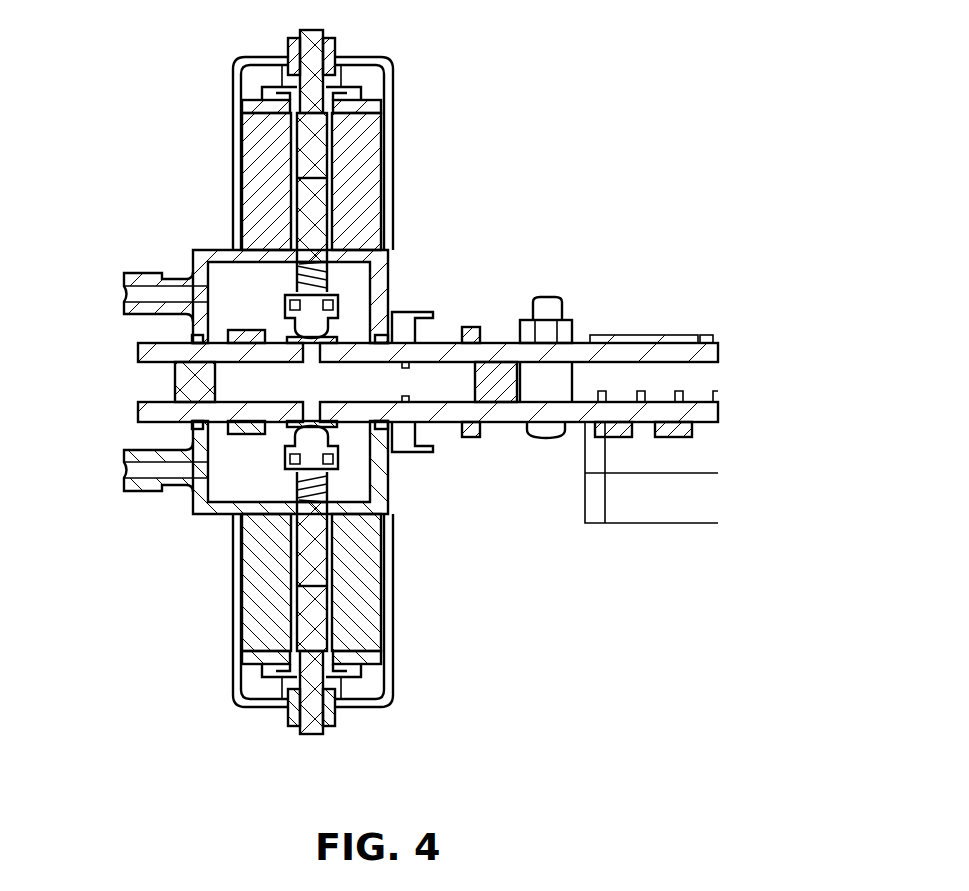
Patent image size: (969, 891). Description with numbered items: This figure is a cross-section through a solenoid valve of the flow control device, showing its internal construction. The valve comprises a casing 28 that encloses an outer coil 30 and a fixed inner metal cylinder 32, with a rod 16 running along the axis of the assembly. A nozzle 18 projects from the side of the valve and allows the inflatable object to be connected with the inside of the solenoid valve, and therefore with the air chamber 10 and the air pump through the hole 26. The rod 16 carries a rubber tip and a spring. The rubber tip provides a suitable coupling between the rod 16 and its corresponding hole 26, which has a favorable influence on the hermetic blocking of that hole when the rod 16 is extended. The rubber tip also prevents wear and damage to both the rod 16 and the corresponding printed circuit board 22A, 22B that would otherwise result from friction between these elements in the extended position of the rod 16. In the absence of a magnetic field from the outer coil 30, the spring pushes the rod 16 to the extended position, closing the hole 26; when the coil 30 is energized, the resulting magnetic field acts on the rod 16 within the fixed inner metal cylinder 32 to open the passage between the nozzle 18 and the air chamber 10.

The air chamber 10 is at (655, 377).
The rod 16 is at (303, 205).
The nozzle 18 is at (138, 272).
The printed circuit board 22A is at (579, 349).
The printed circuit board 22B is at (578, 408).
The hole 26 is at (310, 355).
The casing 28 is at (393, 83).
The outer coil 30 is at (365, 163).
The fixed inner metal cylinder 32 is at (273, 108).